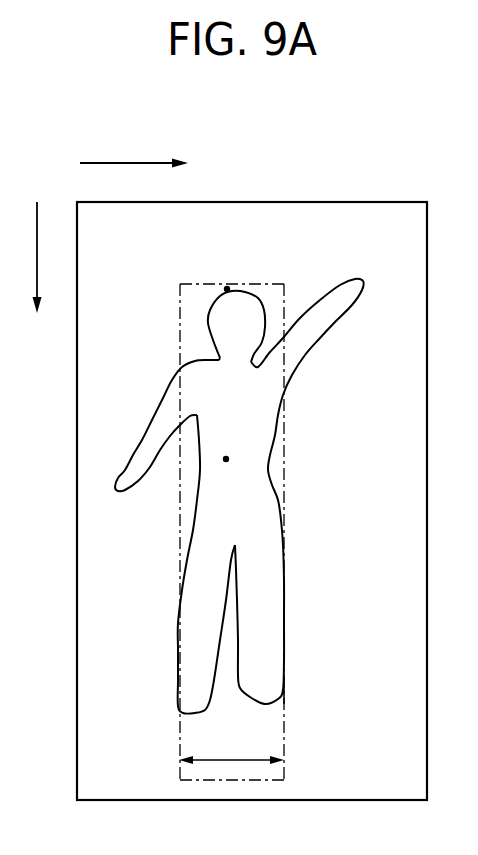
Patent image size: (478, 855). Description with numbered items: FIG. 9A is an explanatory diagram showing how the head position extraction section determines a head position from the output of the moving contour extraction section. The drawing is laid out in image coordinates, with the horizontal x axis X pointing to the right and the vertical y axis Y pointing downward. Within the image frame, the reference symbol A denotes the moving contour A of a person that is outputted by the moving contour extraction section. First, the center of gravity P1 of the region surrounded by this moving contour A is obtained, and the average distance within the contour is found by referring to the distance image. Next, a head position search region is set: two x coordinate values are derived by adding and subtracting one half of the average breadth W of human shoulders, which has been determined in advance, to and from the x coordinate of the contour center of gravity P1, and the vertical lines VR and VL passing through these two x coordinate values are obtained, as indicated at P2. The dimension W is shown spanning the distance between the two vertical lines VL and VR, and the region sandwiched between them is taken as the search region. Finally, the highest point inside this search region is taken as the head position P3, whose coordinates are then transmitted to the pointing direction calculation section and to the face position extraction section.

The moving contour A is at (327, 323).
The center of gravity P1 is at (217, 437).
The x coordinate values of the vertical lines P2 is at (301, 689).
The head position P3 is at (219, 268).
The left vertical line VL is at (181, 534).
The right vertical line VR is at (286, 505).
The average breadth of human's shoulders W is at (231, 743).
The x axis X is at (134, 142).
The y axis Y is at (23, 257).